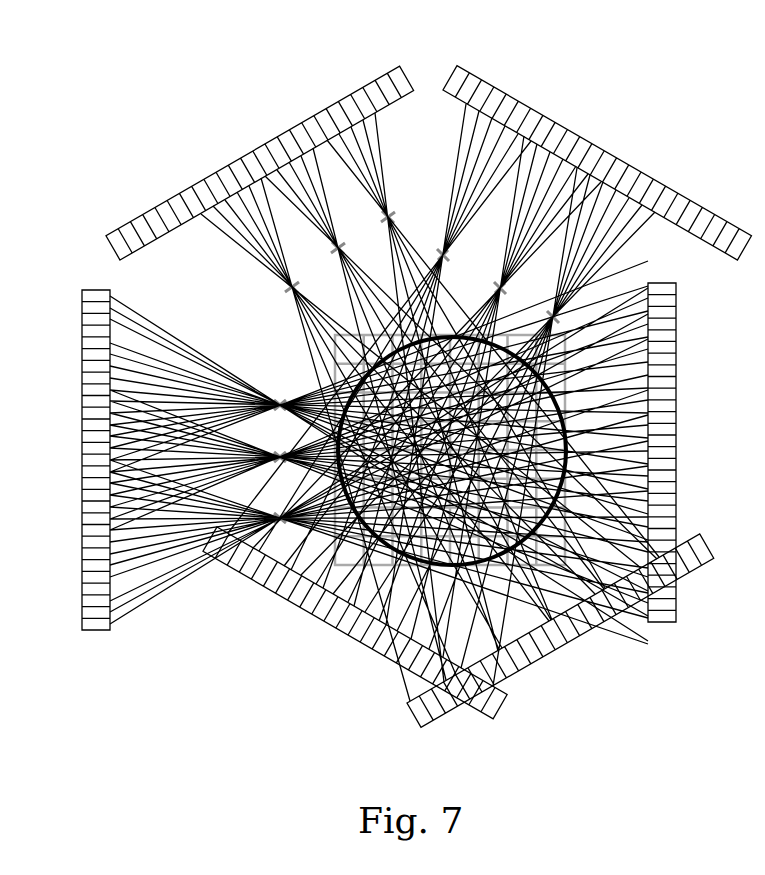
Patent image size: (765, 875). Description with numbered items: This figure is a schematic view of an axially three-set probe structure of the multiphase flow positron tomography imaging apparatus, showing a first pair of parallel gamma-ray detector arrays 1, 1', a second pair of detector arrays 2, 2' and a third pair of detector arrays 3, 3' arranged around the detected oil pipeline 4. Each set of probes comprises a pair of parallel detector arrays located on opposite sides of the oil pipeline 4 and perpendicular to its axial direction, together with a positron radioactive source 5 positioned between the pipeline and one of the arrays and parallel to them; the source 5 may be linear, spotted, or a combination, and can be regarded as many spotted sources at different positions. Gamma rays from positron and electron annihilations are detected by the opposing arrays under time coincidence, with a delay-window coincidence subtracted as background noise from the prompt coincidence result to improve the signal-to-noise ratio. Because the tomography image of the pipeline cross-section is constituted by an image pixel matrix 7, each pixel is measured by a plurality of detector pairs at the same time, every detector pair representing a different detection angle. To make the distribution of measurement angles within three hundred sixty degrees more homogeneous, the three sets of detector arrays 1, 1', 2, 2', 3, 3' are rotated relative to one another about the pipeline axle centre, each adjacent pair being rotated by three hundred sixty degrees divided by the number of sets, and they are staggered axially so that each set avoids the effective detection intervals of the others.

The gamma-ray detector array 1 is at (62, 441).
The gamma-ray detector array 1' is at (690, 447).
The positron detector array 2 is at (260, 163).
The positron detector array 2' is at (560, 630).
The positron detector array 3 is at (597, 163).
The positron detector array 3' is at (355, 623).
The detected oil pipeline 4 is at (351, 370).
The positron radioactive source 5 is at (276, 386).
The image pixel matrix 7 is at (439, 330).